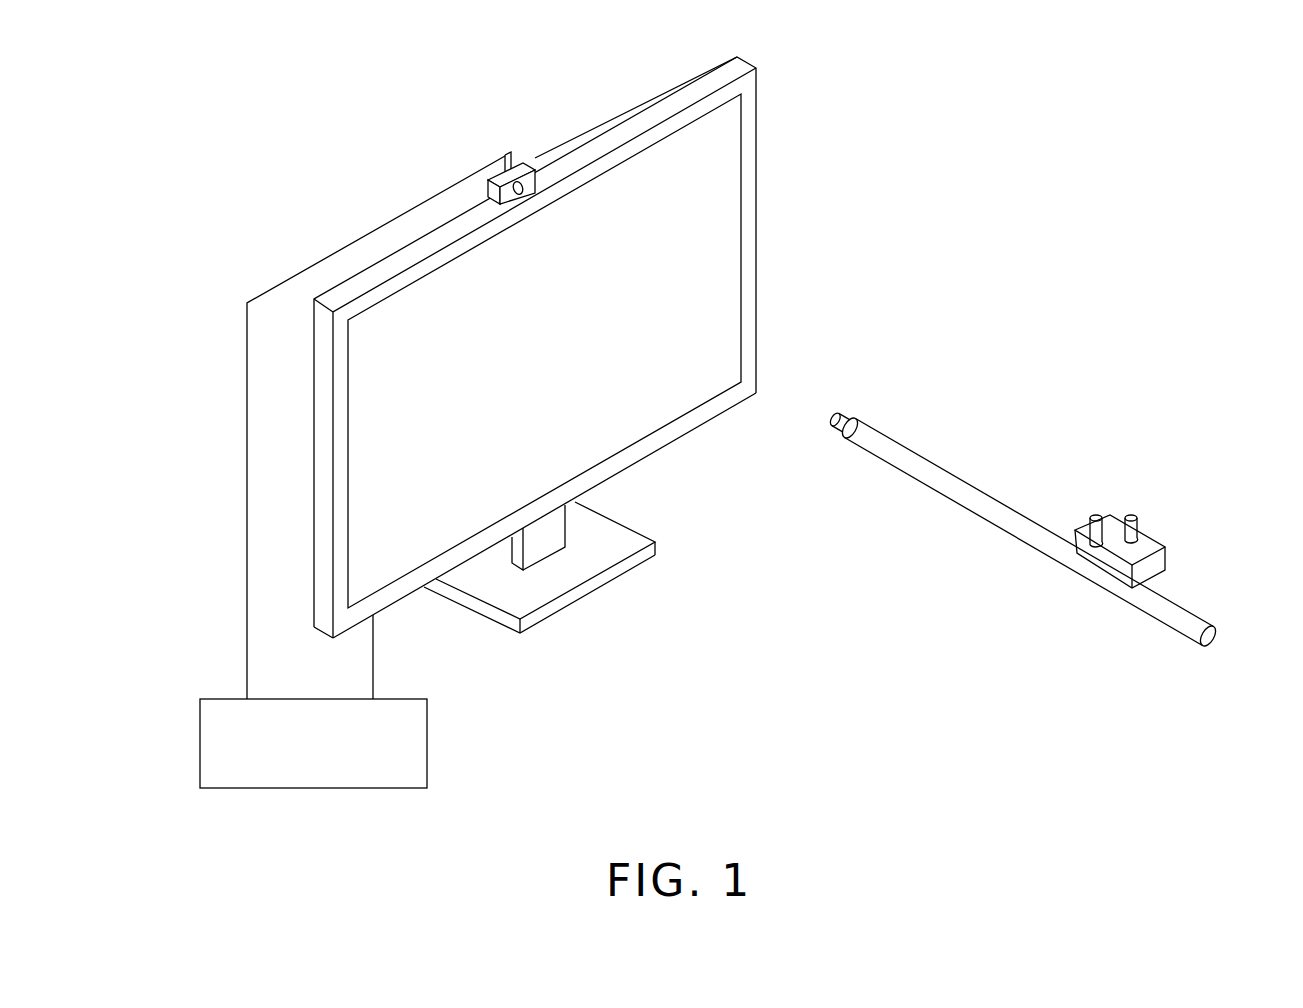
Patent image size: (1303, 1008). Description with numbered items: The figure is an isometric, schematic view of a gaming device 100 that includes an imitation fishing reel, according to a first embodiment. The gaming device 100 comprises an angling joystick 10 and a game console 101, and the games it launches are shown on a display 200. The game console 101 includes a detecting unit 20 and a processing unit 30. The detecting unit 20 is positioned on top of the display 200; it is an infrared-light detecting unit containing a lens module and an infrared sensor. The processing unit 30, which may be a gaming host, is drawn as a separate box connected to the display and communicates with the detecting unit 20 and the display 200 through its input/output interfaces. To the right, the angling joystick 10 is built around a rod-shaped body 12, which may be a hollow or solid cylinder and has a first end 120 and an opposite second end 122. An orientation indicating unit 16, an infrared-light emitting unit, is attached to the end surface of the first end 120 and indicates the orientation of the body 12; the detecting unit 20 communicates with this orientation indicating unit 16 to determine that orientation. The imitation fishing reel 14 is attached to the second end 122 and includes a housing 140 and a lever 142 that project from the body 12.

The gaming device 100 is at (250, 156).
The game console 101 is at (183, 767).
The display 200 is at (633, 405).
The detecting unit 20 is at (517, 167).
The processing unit 30 is at (218, 699).
The angling joystick 10 is at (1038, 422).
The rod-shaped body 12 is at (1005, 518).
The first end 120 is at (855, 422).
The second end 122 is at (1195, 622).
The orientation indicating unit 16 is at (836, 422).
The imitation fishing reel 14 is at (1164, 528).
The housing 140 is at (1167, 570).
The lever 142 is at (1115, 516).